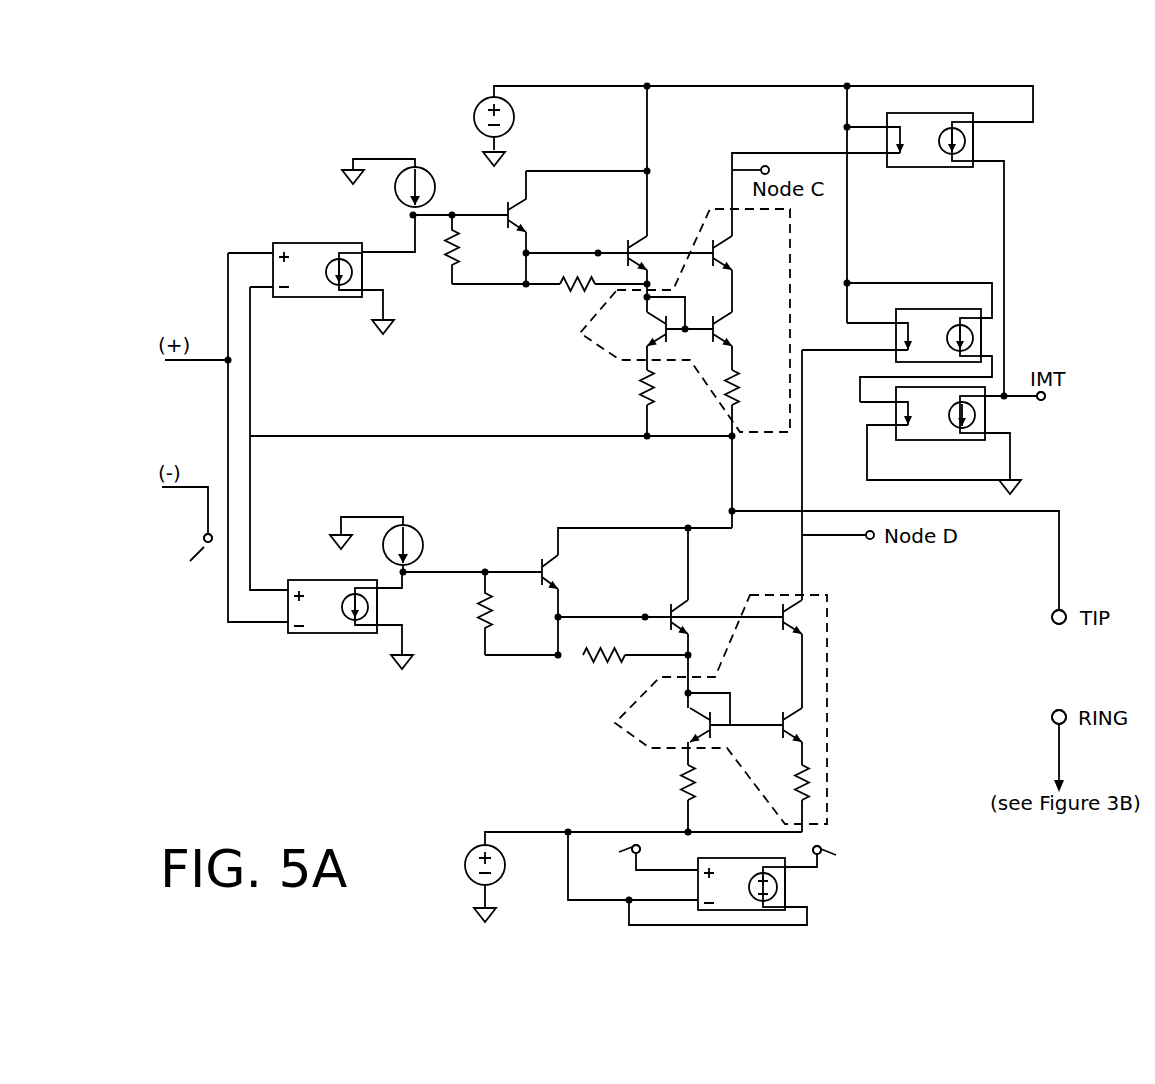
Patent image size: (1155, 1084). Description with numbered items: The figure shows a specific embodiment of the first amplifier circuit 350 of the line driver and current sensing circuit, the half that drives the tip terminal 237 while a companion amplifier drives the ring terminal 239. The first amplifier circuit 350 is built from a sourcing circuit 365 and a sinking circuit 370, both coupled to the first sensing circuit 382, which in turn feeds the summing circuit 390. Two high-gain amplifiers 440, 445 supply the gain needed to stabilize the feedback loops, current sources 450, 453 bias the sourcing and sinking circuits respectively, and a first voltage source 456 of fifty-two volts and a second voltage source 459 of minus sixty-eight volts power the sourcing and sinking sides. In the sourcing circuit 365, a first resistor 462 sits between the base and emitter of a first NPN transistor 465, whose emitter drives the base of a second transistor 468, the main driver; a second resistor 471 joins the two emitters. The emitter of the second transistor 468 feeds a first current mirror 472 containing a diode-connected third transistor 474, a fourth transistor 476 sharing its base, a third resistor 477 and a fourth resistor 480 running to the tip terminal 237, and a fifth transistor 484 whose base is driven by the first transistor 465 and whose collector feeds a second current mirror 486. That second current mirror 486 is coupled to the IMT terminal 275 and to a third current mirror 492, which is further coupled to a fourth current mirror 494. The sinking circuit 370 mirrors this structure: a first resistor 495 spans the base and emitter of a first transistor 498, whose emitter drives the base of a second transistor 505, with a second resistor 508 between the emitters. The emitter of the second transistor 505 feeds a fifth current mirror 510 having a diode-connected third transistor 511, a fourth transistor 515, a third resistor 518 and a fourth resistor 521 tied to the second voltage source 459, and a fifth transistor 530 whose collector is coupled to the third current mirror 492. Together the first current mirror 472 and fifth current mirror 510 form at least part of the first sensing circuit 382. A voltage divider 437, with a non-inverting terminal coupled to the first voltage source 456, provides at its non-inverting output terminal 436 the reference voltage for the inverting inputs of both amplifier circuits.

The tip terminal 237 is at (1050, 619).
The ring terminal 239 is at (1050, 722).
The IMT terminal 275 is at (1044, 400).
The first amplifier circuit 350 is at (268, 745).
The sourcing circuit 365 is at (290, 208).
The sinking circuit 370 is at (385, 698).
The first sensing circuit 382 is at (876, 739).
The summing circuit 390 is at (1072, 155).
The non-inverting output terminal 436 is at (513, 703).
The voltage divider 437 is at (720, 858).
The high-gain amplifier 440 is at (322, 296).
The high-gain amplifier 445 is at (318, 580).
The current source 450 is at (421, 175).
The current source 453 is at (410, 527).
The first voltage source 456 is at (510, 120).
The second voltage source 459 is at (478, 850).
The first resistor 462 is at (460, 258).
The first transistor 465 is at (541, 210).
The second transistor 468 is at (642, 247).
The second resistor 471 is at (565, 295).
The first current mirror 472 is at (582, 335).
The third transistor 474 is at (628, 335).
The fourth transistor 476 is at (722, 326).
The third resistor 477 is at (655, 400).
The fourth resistor 480 is at (740, 385).
The fifth transistor 484 is at (742, 240).
The second current mirror 486 is at (912, 167).
The third current mirror 492 is at (930, 309).
The fourth current mirror 494 is at (950, 440).
The first resistor 495 is at (480, 610).
The first transistor 498 is at (540, 562).
The second transistor 505 is at (680, 612).
The second resistor 508 is at (600, 668).
The fifth current mirror 510 is at (617, 722).
The third transistor 511 is at (700, 723).
The fourth transistor 515 is at (774, 712).
The third resistor 518 is at (690, 779).
The fourth resistor 521 is at (793, 786).
The fifth transistor 530 is at (788, 626).